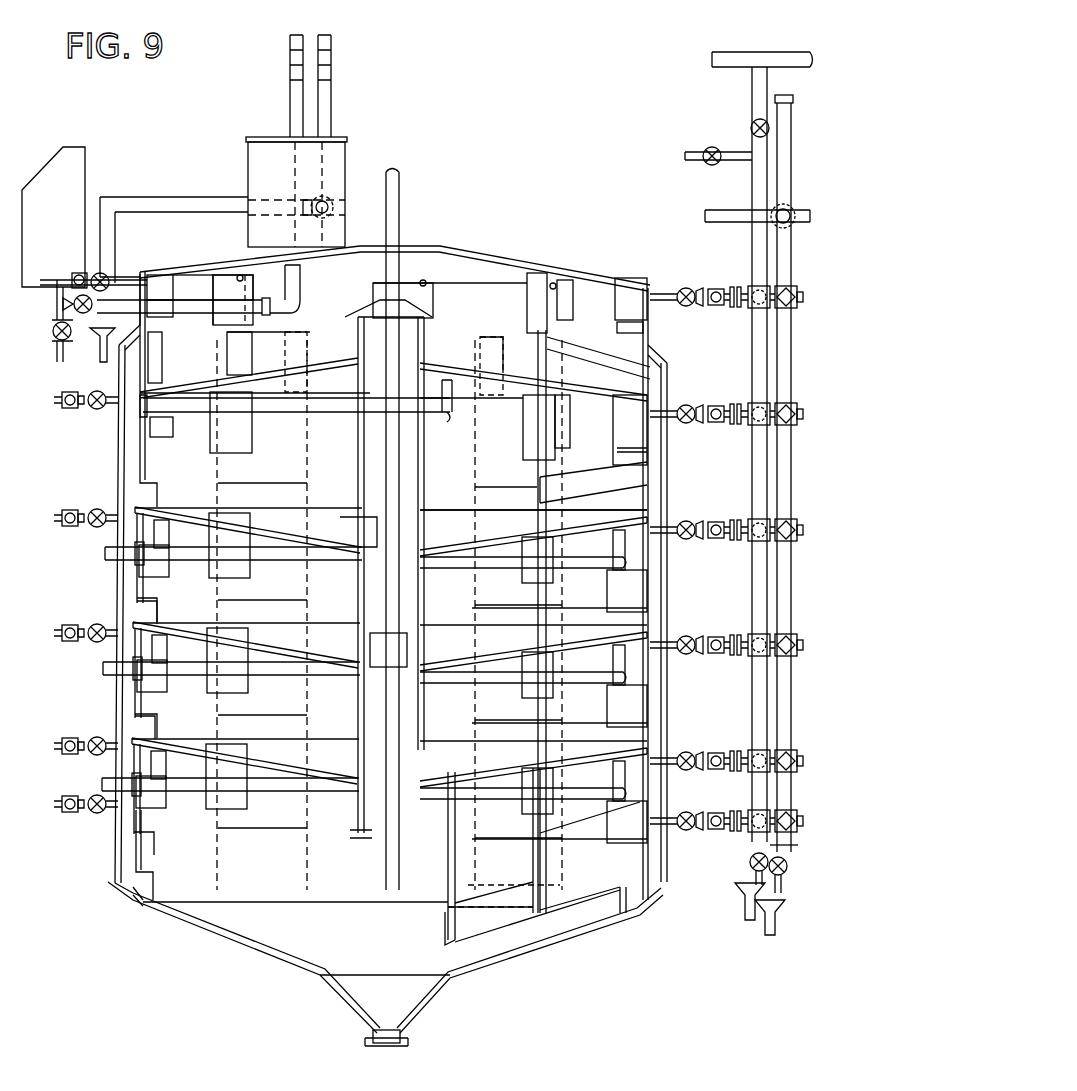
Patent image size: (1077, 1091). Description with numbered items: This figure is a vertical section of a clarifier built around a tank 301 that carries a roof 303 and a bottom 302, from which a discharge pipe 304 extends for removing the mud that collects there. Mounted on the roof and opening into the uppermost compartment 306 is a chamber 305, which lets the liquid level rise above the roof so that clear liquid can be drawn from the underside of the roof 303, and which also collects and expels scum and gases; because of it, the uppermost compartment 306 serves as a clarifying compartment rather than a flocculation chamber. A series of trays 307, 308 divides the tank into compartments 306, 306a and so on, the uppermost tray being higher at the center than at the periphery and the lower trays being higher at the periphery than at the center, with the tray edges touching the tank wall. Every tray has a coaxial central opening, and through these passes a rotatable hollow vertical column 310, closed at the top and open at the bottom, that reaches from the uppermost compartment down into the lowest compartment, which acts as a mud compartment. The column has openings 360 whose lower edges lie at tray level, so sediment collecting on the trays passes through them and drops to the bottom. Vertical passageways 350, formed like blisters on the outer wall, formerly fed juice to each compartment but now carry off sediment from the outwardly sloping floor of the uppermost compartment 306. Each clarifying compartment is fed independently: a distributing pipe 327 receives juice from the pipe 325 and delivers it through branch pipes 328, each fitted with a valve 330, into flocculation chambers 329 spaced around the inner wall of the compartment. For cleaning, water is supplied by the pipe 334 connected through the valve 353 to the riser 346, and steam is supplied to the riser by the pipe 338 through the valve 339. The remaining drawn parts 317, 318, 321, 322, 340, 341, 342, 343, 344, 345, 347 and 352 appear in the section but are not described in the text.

The tank 301 is at (648, 338).
The bottom 302 is at (240, 945).
The roof 303 is at (528, 258).
The discharge pipe 304 is at (382, 1050).
The chamber 305 is at (252, 163).
The uppermost compartment 306 is at (500, 316).
The compartment 306a is at (505, 456).
The tray 307 is at (290, 365).
The tray 308 is at (312, 535).
The hollow vertical column 310 is at (352, 460).
The baffle 317 is at (600, 348).
The baffle 318 is at (602, 480).
The central tube 321 is at (432, 348).
The bracket 322 is at (620, 404).
The pipe 325 is at (705, 222).
The distributing pipe 327 is at (713, 306).
The branch pipe 328 is at (660, 292).
The flocculation chamber 329 is at (166, 275).
The valve 330 is at (662, 290).
The pipe 334 is at (765, 50).
The pipe 338 is at (700, 152).
The valve 339 is at (713, 165).
The pipe 340 is at (197, 306).
The tank 341 is at (70, 150).
The elbow 342 is at (300, 275).
The duct 343 is at (138, 203).
The shaft 344 is at (328, 197).
The pipe 345 is at (782, 130).
The riser 346 is at (755, 195).
The pivot 347 is at (424, 282).
The vertical passageway 350 is at (130, 455).
The bracket 352 is at (152, 445).
The valve 353 is at (752, 128).
The opening 360 is at (365, 522).